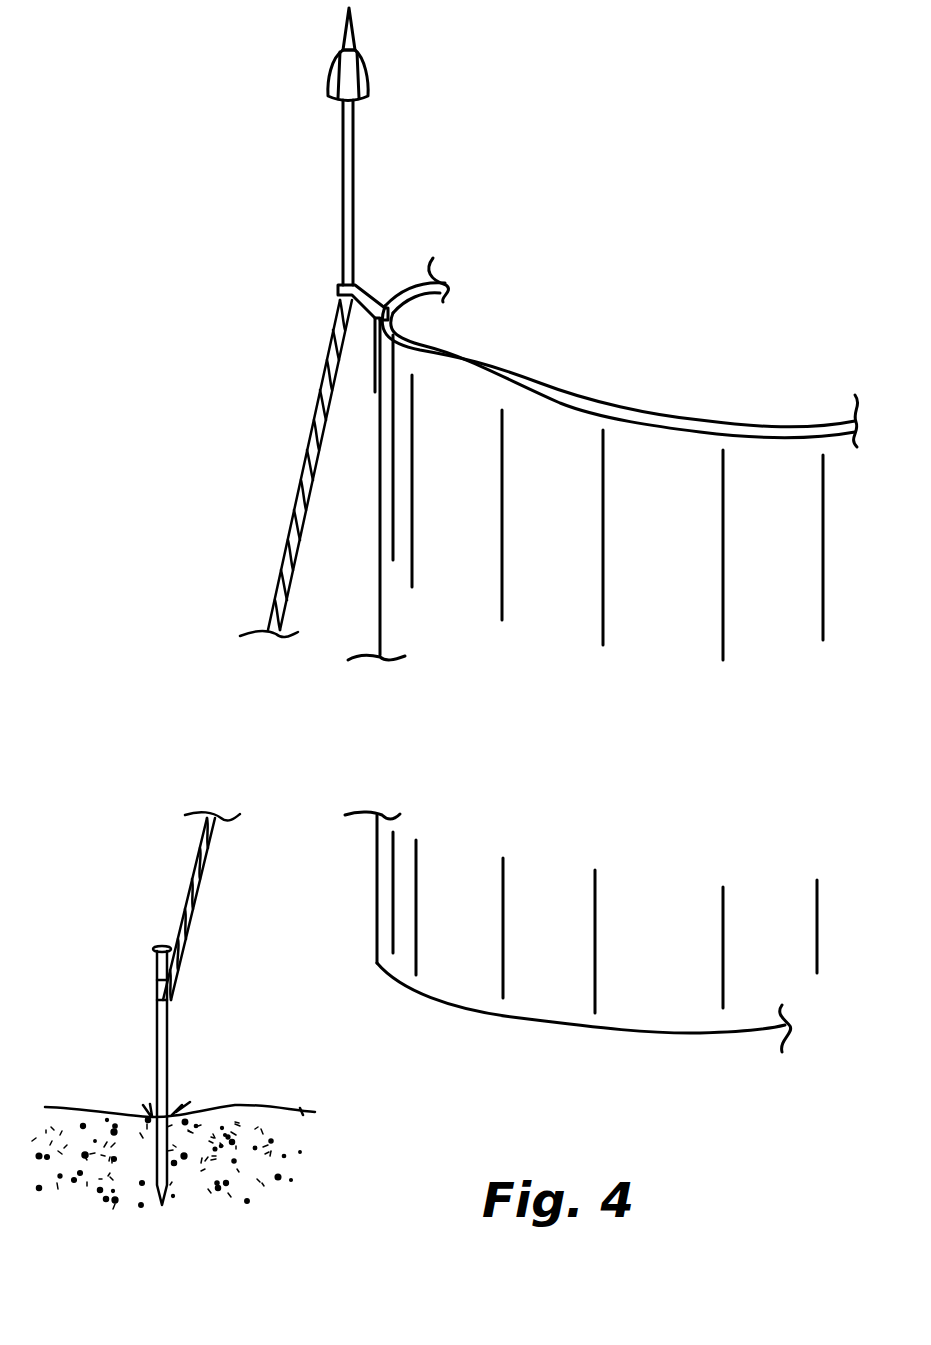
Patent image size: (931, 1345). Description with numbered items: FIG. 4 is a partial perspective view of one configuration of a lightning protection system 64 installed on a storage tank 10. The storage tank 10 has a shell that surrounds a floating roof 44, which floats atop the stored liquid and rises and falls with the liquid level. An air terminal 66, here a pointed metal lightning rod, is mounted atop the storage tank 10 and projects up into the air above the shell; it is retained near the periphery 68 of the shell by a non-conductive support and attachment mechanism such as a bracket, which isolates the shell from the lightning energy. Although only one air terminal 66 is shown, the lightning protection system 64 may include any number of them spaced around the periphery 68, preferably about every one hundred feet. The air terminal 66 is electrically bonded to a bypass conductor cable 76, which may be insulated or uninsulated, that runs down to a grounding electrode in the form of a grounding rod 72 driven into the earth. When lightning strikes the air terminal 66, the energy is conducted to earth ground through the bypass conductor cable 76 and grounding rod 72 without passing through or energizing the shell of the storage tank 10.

The storage tank 10 is at (700, 163).
The floating roof 44 is at (575, 759).
The lightning protection system 64 is at (175, 137).
The air terminal 66 is at (284, 81).
The periphery 68 is at (560, 405).
The grounding rod 72 is at (155, 955).
The bypass conductor cable 76 is at (312, 447).